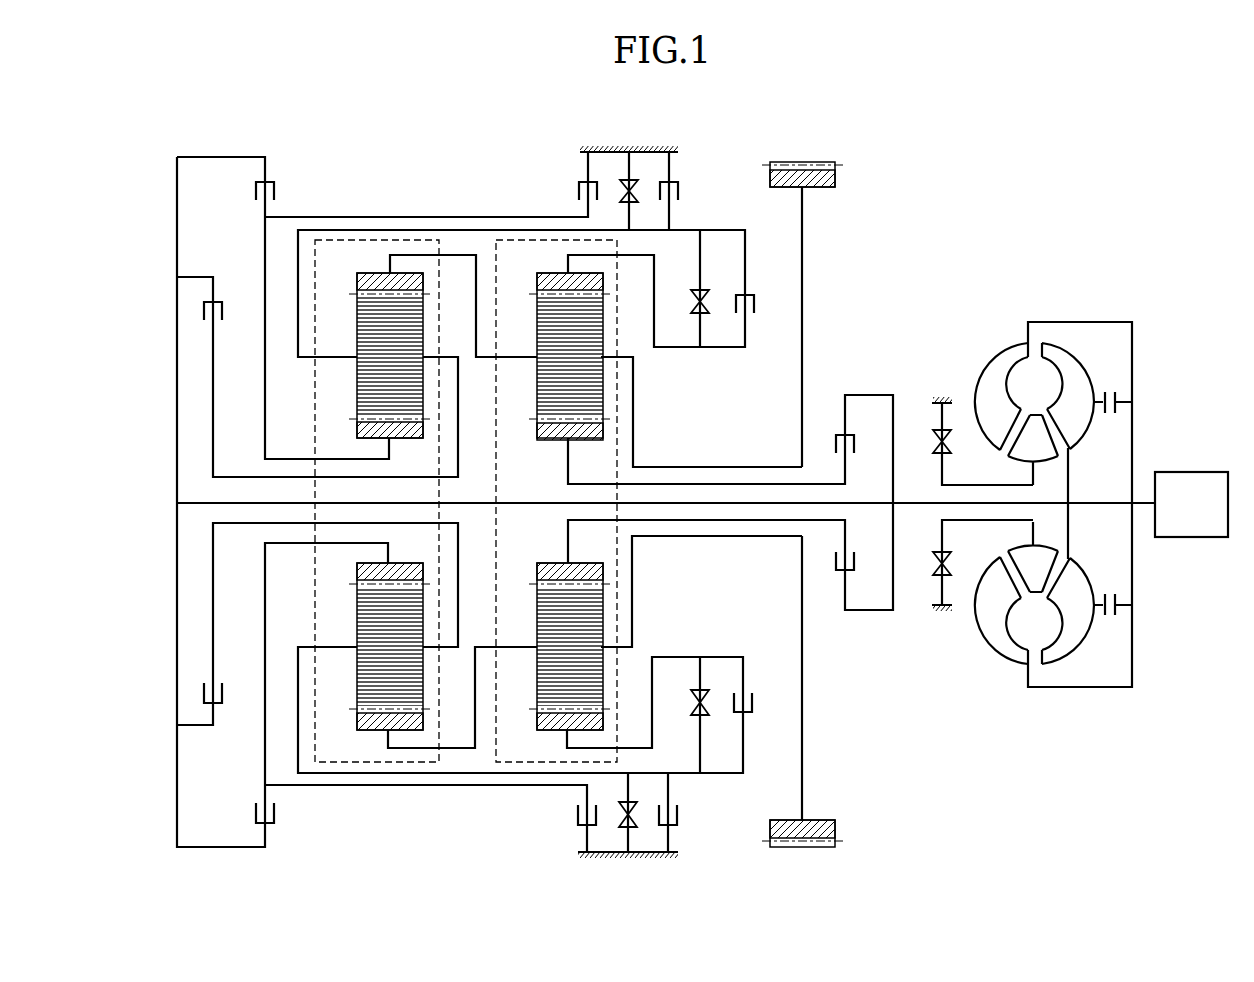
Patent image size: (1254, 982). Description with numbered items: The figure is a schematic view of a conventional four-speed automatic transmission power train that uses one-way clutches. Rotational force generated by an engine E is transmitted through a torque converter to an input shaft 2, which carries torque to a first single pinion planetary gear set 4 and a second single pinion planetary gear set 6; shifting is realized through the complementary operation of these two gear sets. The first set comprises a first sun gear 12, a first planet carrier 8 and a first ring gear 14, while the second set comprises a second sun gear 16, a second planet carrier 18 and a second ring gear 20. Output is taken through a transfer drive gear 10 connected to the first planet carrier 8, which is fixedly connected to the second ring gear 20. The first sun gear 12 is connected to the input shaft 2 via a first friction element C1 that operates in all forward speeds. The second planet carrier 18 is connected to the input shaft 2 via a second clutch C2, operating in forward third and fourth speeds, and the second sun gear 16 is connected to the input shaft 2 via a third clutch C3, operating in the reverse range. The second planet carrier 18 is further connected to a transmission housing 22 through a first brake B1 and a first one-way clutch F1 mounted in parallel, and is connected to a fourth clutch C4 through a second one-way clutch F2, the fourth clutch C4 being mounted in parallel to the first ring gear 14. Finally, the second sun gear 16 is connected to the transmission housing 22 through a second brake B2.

The input shaft 2 is at (918, 506).
The first single pinion planetary gear set 4 is at (529, 240).
The second single pinion planetary gear set 6 is at (374, 240).
The first planet carrier 8 is at (608, 358).
The transfer drive gear 10 is at (790, 188).
The first sun gear 12 is at (541, 440).
The first ring gear 14 is at (541, 282).
The second sun gear 16 is at (357, 432).
The second planet carrier 18 is at (339, 358).
The second ring gear 20 is at (361, 282).
The transmission housing 22 is at (670, 150).
The first friction element C1 is at (859, 500).
The second clutch C2 is at (229, 501).
The third clutch C3 is at (280, 500).
The fourth clutch C4 is at (758, 501).
The first brake B1 is at (681, 491).
The second brake B2 is at (599, 491).
The first one-way clutch F1 is at (639, 492).
The second one-way clutch F2 is at (809, 502).
The engine E is at (1191, 504).